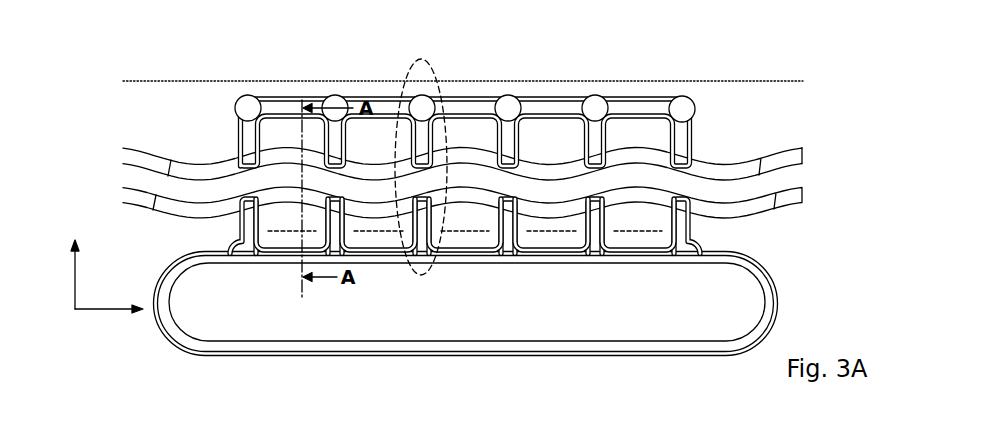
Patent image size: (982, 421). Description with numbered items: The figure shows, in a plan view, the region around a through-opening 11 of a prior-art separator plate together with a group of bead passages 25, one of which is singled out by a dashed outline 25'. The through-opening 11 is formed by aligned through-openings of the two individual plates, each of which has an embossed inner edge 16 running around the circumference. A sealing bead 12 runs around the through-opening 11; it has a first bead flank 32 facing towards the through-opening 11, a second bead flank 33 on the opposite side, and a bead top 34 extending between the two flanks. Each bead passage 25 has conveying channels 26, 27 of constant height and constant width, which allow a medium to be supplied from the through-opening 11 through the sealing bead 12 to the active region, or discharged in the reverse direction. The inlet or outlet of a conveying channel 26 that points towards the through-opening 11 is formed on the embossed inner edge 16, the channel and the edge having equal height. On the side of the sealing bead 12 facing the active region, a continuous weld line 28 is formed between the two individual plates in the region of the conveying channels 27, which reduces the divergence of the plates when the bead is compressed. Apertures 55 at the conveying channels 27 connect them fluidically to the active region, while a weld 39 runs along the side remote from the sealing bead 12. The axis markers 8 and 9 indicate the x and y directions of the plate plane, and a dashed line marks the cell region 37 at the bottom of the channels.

The x-direction axis 8 is at (74, 263).
The y-direction axis 9 is at (92, 310).
The through-opening 11 is at (458, 318).
The sealing bead 12 is at (198, 190).
The embossed inner edge 16 is at (588, 340).
The bead passage 25 is at (658, 44).
The contact unit section 25' is at (431, 147).
The conveying channel 26 is at (250, 230).
The conveying channel 27 is at (248, 146).
The weld line 28 is at (383, 235).
The first bead flank 32 is at (790, 198).
The second bead flank 33 is at (783, 160).
The bead top 34 is at (792, 180).
The receiving cell 37 is at (283, 243).
The weld 39 is at (320, 80).
The aperture 55 is at (508, 104).